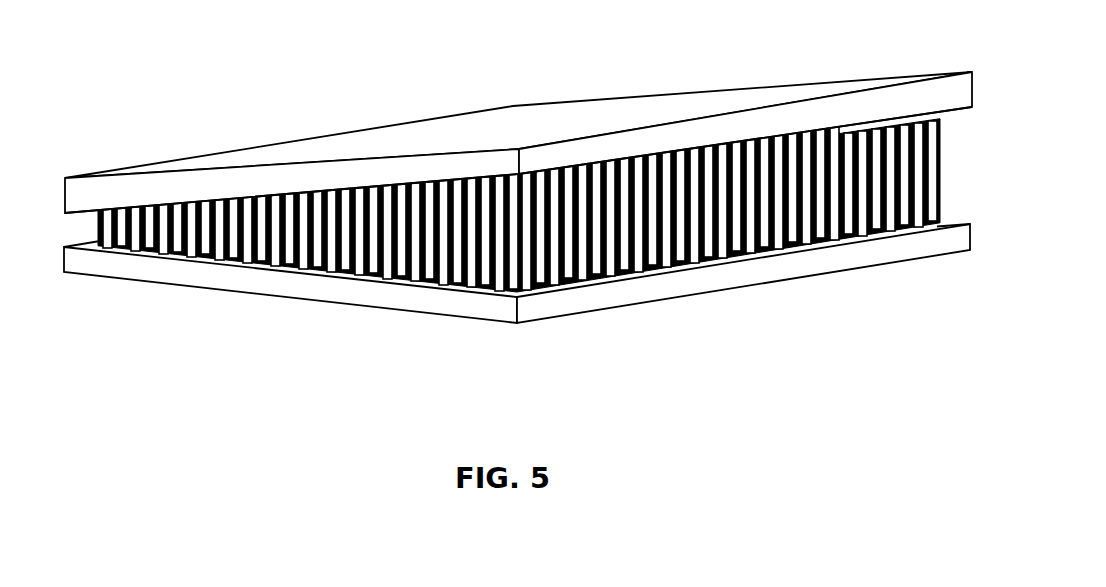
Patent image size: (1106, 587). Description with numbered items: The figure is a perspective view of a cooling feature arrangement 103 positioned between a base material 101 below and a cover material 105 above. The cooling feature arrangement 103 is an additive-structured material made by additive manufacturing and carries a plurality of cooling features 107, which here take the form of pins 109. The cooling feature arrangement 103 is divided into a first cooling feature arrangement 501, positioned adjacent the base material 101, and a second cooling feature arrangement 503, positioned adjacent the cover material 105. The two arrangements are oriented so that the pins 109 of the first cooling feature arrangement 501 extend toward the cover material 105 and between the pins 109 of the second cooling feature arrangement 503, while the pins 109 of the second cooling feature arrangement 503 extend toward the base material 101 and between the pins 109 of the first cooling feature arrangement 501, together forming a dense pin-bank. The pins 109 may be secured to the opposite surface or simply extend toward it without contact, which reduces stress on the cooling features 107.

The base material 101 is at (972, 240).
The cooling feature arrangement 103 is at (581, 198).
The cover material 105 is at (972, 82).
The cooling features 107 is at (833, 138).
The pins 109 is at (717, 148).
The first cooling feature arrangement 501 is at (590, 291).
The second cooling feature arrangement 503 is at (238, 195).